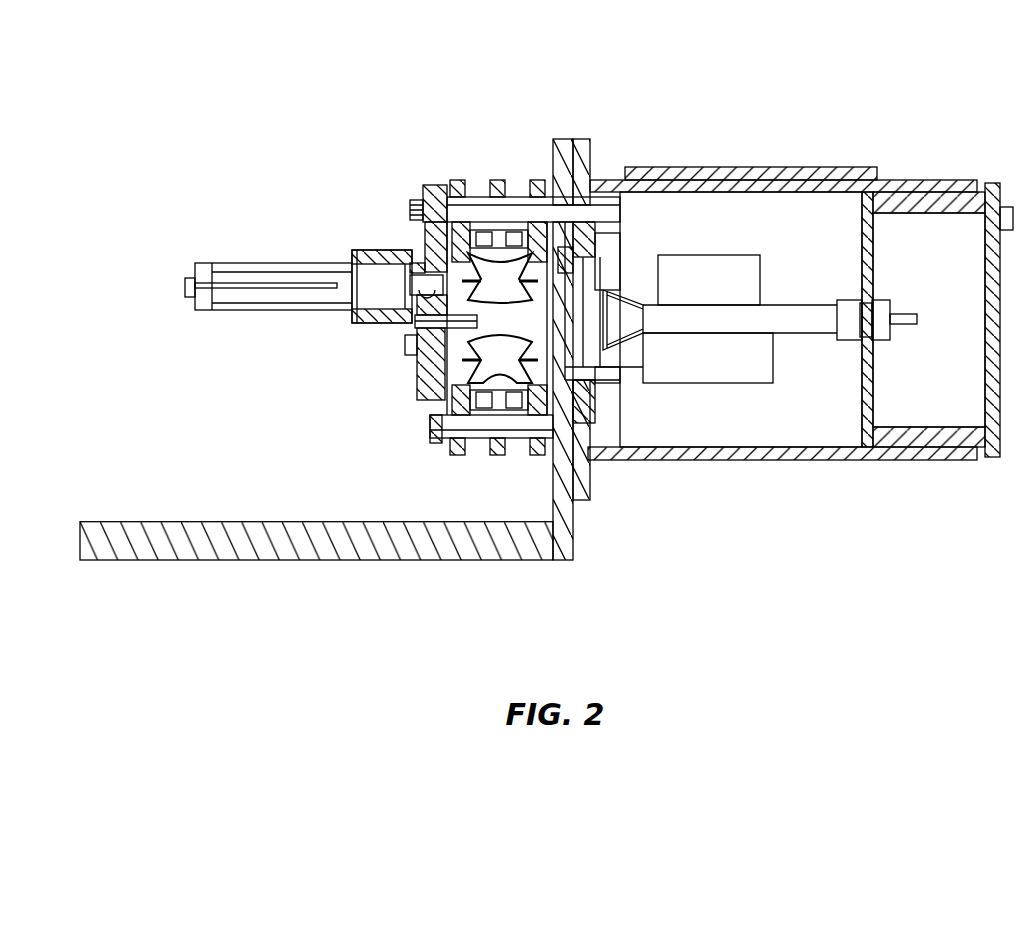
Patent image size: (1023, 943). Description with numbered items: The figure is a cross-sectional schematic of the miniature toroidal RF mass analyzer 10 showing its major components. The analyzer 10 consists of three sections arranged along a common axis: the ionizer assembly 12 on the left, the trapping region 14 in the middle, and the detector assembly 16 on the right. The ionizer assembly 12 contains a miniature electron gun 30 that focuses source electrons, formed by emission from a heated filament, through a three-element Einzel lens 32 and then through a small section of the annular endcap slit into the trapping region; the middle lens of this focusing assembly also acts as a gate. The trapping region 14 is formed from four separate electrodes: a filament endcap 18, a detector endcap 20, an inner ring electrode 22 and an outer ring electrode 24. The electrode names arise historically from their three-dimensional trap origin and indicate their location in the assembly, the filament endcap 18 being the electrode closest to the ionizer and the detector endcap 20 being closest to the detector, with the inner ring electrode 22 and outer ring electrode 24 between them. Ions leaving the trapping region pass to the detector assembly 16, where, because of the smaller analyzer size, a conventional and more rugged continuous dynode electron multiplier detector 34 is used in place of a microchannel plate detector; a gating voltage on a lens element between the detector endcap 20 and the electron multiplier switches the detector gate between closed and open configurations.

The miniature toroidal RF mass analyzer 10 is at (836, 116).
The ionizer assembly 12 is at (297, 285).
The trapping region 14 is at (555, 572).
The detector assembly 16 is at (785, 397).
The filament endcap 18 is at (452, 240).
The detector endcap 20 is at (546, 398).
The inner ring electrode 22 is at (489, 325).
The outer ring electrode 24 is at (490, 385).
The miniature electron gun 30 is at (320, 283).
The three-element Einzel lens 32 is at (414, 280).
The continuous dynode electron multiplier detector 34 is at (658, 318).